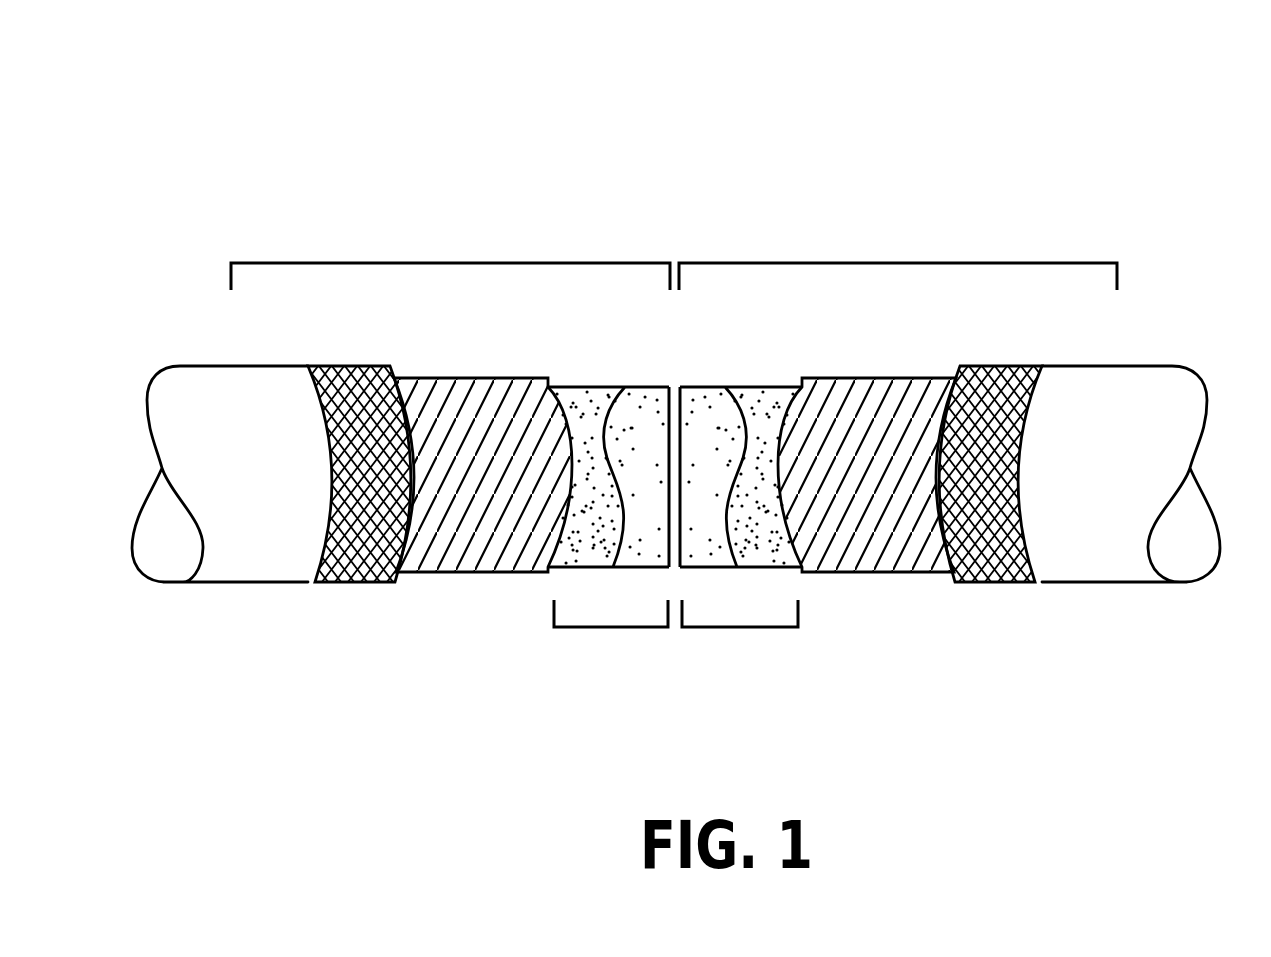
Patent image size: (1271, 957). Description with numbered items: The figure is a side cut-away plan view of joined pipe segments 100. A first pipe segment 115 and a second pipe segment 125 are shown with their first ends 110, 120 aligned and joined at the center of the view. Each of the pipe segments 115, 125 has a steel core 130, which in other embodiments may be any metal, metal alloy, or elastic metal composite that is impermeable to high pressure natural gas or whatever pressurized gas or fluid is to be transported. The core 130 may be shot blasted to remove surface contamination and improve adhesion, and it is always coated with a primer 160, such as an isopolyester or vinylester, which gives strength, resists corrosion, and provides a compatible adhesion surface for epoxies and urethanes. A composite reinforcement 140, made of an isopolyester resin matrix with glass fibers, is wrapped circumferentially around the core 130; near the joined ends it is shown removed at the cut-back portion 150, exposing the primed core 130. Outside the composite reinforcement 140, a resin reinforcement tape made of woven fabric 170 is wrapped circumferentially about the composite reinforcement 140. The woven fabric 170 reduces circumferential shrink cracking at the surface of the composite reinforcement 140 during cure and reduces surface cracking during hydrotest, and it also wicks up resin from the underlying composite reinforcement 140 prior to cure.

The joined pipe segments 100 is at (75, 82).
The first end of first pipe segment 110 is at (450, 258).
The first end of second pipe segment 120 is at (898, 258).
The first pipe segment 115 is at (206, 382).
The second pipe segment 125 is at (1136, 382).
The steel core 130 is at (708, 394).
The composite reinforcement 140 is at (443, 369).
The cut-back portion 150 is at (608, 628).
The primer 160 is at (576, 393).
The woven fabric 170 is at (332, 358).